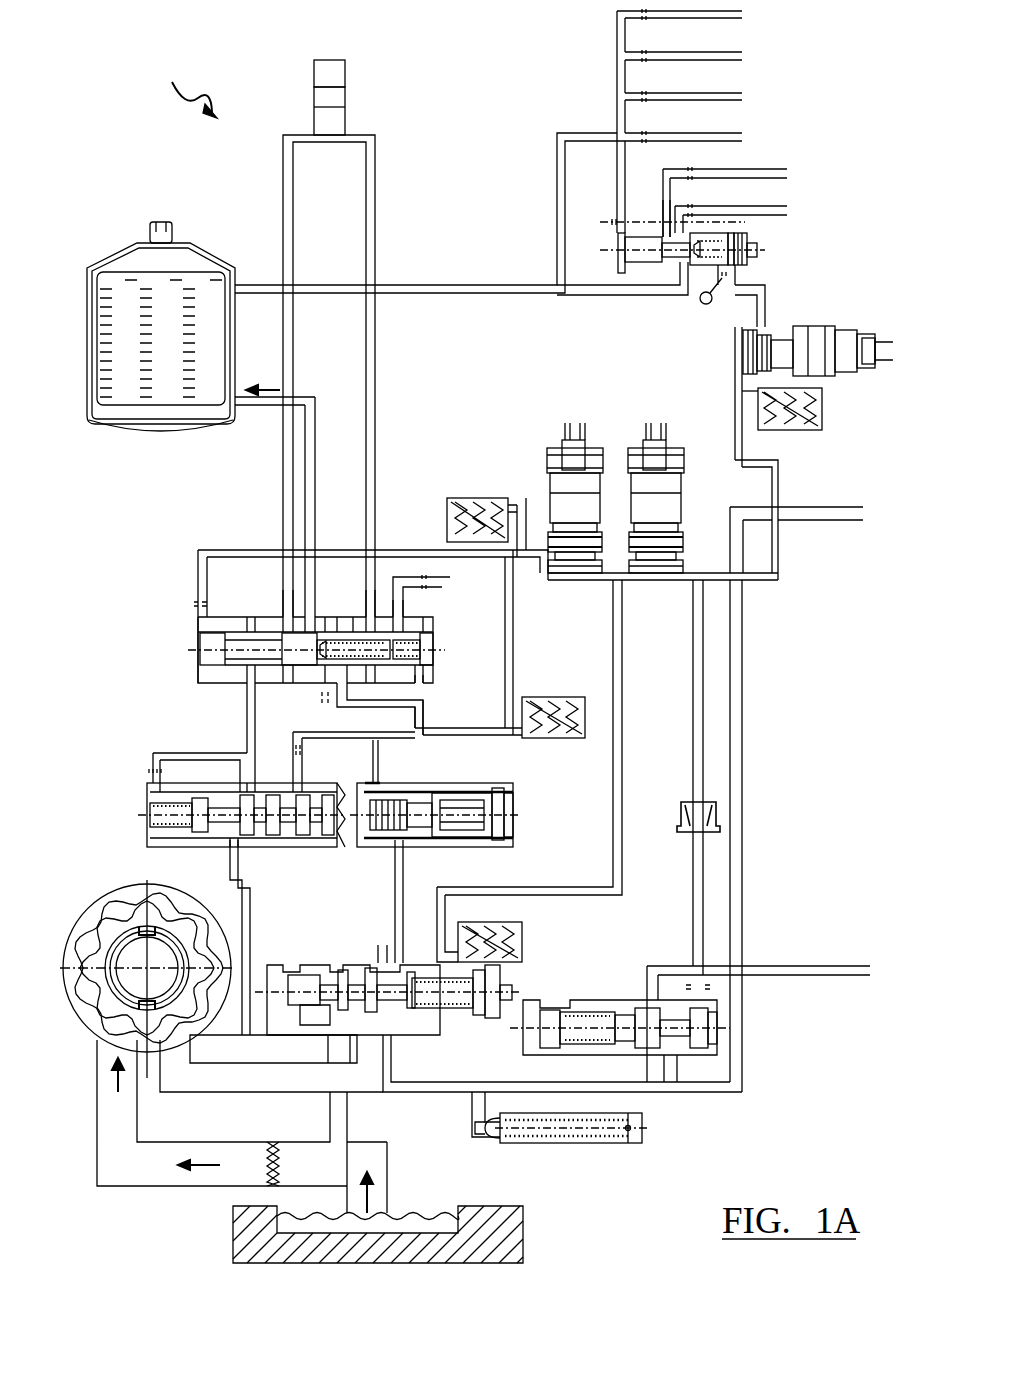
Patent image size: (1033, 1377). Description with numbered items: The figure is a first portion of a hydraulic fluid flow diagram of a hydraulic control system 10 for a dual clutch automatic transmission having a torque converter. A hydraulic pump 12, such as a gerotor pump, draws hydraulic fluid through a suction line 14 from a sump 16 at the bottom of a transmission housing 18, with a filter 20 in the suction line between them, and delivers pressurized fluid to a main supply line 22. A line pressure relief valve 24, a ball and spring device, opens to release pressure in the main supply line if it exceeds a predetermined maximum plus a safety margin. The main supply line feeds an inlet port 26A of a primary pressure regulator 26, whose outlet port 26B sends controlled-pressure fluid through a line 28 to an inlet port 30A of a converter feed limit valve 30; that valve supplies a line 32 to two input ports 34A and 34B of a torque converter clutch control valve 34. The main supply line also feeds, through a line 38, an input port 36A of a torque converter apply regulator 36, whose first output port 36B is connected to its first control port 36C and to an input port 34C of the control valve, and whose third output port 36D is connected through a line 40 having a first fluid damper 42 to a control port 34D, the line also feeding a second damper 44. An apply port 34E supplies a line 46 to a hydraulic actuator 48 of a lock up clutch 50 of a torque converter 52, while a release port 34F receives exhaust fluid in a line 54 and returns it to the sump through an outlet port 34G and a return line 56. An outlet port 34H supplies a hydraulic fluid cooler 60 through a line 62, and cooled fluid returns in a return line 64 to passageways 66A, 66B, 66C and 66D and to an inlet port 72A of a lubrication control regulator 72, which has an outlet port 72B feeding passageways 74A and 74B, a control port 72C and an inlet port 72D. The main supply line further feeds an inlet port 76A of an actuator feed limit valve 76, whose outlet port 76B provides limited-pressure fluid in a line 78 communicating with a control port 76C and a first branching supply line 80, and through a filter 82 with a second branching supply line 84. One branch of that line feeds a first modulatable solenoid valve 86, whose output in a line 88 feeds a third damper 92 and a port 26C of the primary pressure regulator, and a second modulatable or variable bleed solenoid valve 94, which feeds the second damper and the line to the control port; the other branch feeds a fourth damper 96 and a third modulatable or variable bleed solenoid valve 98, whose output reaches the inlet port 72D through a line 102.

The hydraulic control system 10 is at (182, 87).
The hydraulic pump 12 is at (123, 902).
The suction line 14 is at (165, 1190).
The sump 16 is at (432, 1212).
The transmission housing 18 is at (506, 1226).
The filter 20 is at (266, 1164).
The main supply line 22 is at (849, 507).
The line pressure relief valve 24 is at (581, 1141).
The primary pressure regulator 26 is at (340, 964).
The inlet port 26A is at (374, 1022).
The outlet port 26B is at (385, 962).
The port 26C is at (489, 1000).
The line 28 is at (394, 899).
The converter feed limit valve 30 is at (470, 826).
The inlet port 30A is at (405, 848).
The line 32 is at (424, 712).
The torque converter clutch control valve 34 is at (206, 672).
The input port 34A is at (326, 690).
The input port 34B is at (394, 686).
The input port 34C is at (250, 695).
The control port 34D is at (198, 622).
The apply port 34E is at (286, 590).
The release port 34F is at (373, 596).
The outlet port 34G is at (406, 600).
The outlet port 34H is at (309, 592).
The torque converter apply regulator 36 is at (147, 815).
The input port 36A is at (233, 848).
The first output port 36B is at (257, 778).
The first control port 36C is at (152, 760).
The third output port 36D is at (303, 786).
The line 38 is at (246, 881).
The line 40 is at (506, 741).
The first fluid damper 42 is at (560, 697).
The second damper 44 is at (470, 498).
The line 46 is at (295, 366).
The hydraulic actuator 48 is at (326, 143).
The lock up clutch 50 is at (313, 75).
The torque converter 52 is at (327, 58).
The line 54 is at (377, 244).
The return line 56 is at (449, 586).
The hydraulic fluid cooler 60 is at (204, 262).
The line 62 is at (262, 410).
The return line 64 is at (476, 296).
The passageway 66A is at (742, 20).
The passageway 66B is at (742, 62).
The passageway 66C is at (742, 102).
The passageway 66D is at (742, 142).
The lubrication control regulator 72 is at (662, 272).
The inlet port 72A is at (672, 288).
The outlet port 72B is at (683, 228).
The control port 72C is at (612, 234).
The inlet port 72D is at (740, 290).
The passageway 74A is at (788, 178).
The passageway 74B is at (788, 215).
The actuator feed limit valve 76 is at (612, 1006).
The inlet port 76A is at (668, 1057).
The outlet port 76B is at (647, 978).
The control port 76C is at (712, 990).
The line 78 is at (690, 884).
The first branching supply line 80 is at (786, 966).
The filter 82 is at (690, 803).
The second branching supply line 84 is at (602, 586).
The first modulatable solenoid valve 86 is at (673, 508).
The line 88 is at (612, 880).
The third damper 92 is at (500, 941).
The second modulatable or variable bleed solenoid valve 94 is at (572, 460).
The fourth damper 96 is at (801, 432).
The third modulatable or variable bleed solenoid valve 98 is at (826, 336).
The line 102 is at (757, 286).